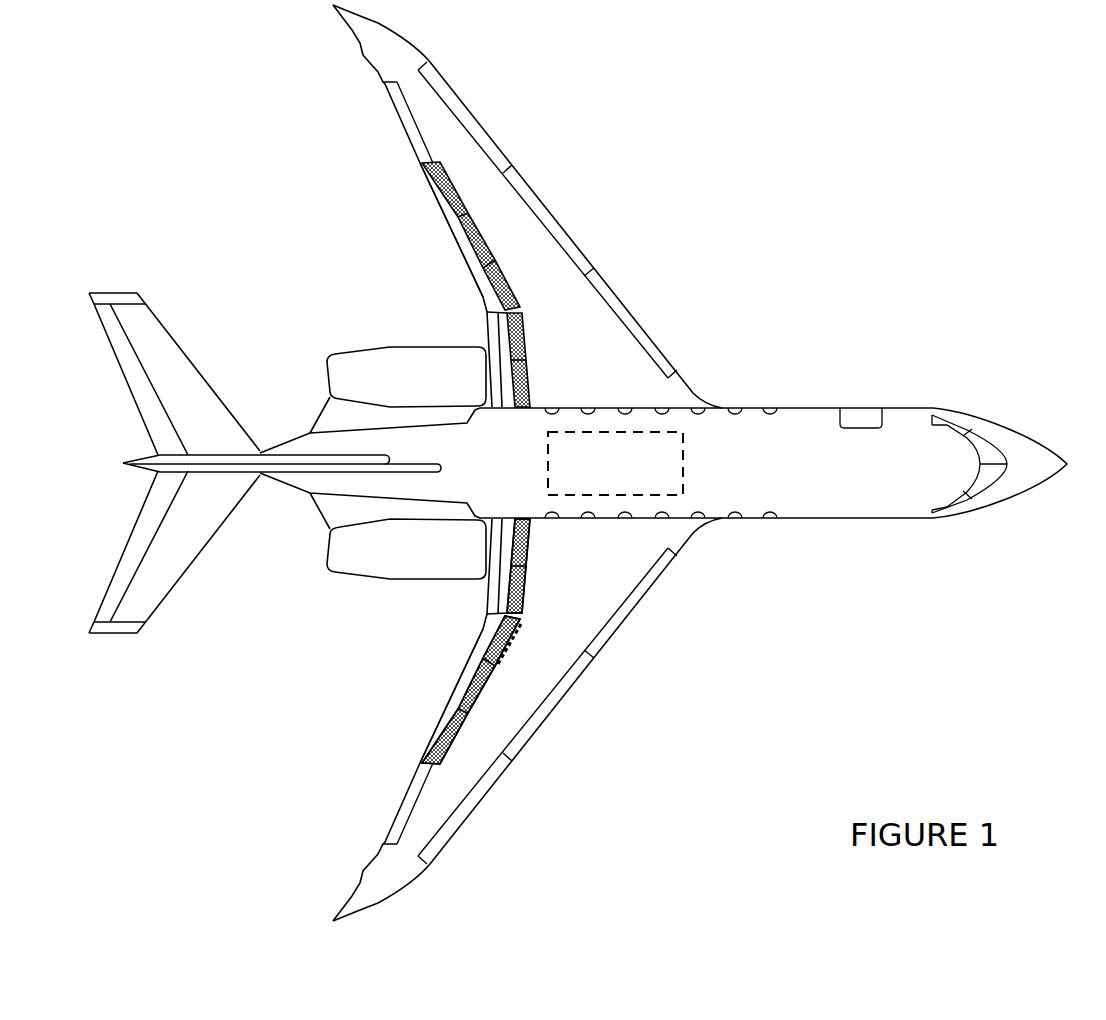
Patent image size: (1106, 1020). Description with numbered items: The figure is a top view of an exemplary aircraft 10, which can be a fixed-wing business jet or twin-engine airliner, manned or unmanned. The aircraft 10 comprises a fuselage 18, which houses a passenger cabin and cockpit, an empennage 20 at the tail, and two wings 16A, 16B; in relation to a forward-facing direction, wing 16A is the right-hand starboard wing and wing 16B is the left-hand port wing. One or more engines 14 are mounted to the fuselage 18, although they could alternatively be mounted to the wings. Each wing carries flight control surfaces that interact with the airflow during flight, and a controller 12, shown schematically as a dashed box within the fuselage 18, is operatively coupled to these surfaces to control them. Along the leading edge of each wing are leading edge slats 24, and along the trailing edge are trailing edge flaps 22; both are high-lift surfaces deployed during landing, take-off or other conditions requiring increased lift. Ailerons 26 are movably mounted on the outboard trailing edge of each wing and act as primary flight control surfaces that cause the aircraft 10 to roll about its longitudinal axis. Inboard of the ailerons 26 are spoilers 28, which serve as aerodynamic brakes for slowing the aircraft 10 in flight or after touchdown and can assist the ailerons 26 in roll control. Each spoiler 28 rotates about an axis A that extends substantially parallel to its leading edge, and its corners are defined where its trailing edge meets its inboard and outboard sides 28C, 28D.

The aircraft 10 is at (962, 128).
The controller 12 is at (633, 478).
The engine 14 is at (372, 358).
The wing 16A is at (640, 645).
The wing 16B is at (640, 268).
The fuselage 18 is at (840, 522).
The empennage 20 is at (90, 460).
The trailing edge flap 22 is at (460, 250).
The leading edge slat 24 is at (535, 205).
The aileron 26 is at (397, 117).
The spoiler 28 is at (512, 268).
The inboard side of spoiler 28C is at (524, 612).
The outboard side of spoiler 28D is at (487, 668).
The axis A is at (521, 653).